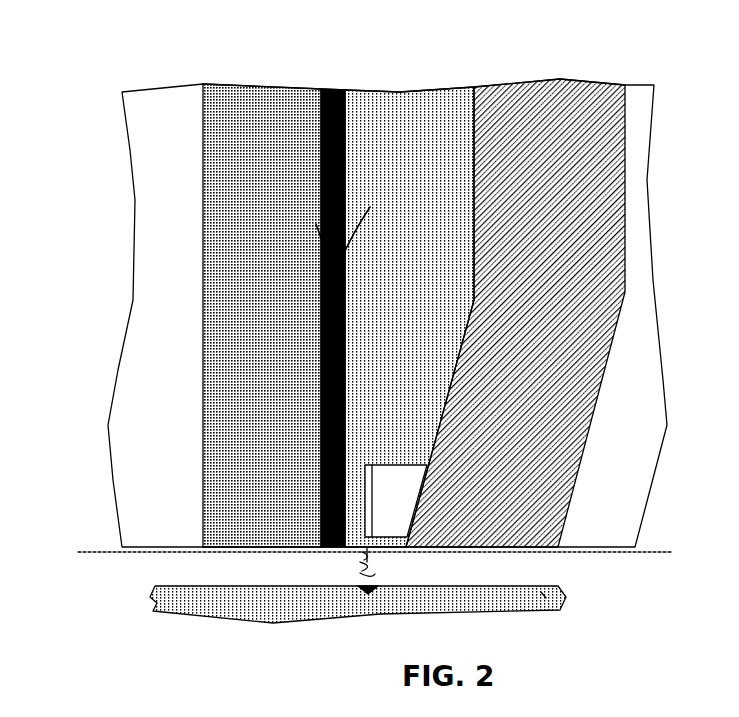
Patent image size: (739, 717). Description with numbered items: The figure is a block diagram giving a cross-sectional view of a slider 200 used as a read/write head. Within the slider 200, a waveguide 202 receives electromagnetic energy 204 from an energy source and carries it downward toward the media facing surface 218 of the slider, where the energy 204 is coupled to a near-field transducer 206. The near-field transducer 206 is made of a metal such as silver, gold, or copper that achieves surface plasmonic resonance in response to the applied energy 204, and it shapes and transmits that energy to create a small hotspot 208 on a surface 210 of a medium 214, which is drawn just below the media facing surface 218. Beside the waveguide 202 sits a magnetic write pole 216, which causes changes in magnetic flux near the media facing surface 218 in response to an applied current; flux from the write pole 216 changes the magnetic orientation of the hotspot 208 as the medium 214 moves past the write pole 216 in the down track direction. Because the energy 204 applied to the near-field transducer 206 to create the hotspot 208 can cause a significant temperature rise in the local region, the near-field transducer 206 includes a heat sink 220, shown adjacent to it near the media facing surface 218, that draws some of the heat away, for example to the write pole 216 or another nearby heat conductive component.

The slider 200 is at (104, 57).
The waveguide 202 is at (468, 63).
The electromagnetic energy 204 is at (298, 208).
The near-field transducer 206 is at (360, 557).
The hotspot 208 is at (365, 598).
The surface 210 is at (207, 586).
The medium 214 is at (543, 596).
The magnetic write pole 216 is at (562, 80).
The media facing surface 218 is at (600, 553).
The heat sink 220 is at (389, 530).